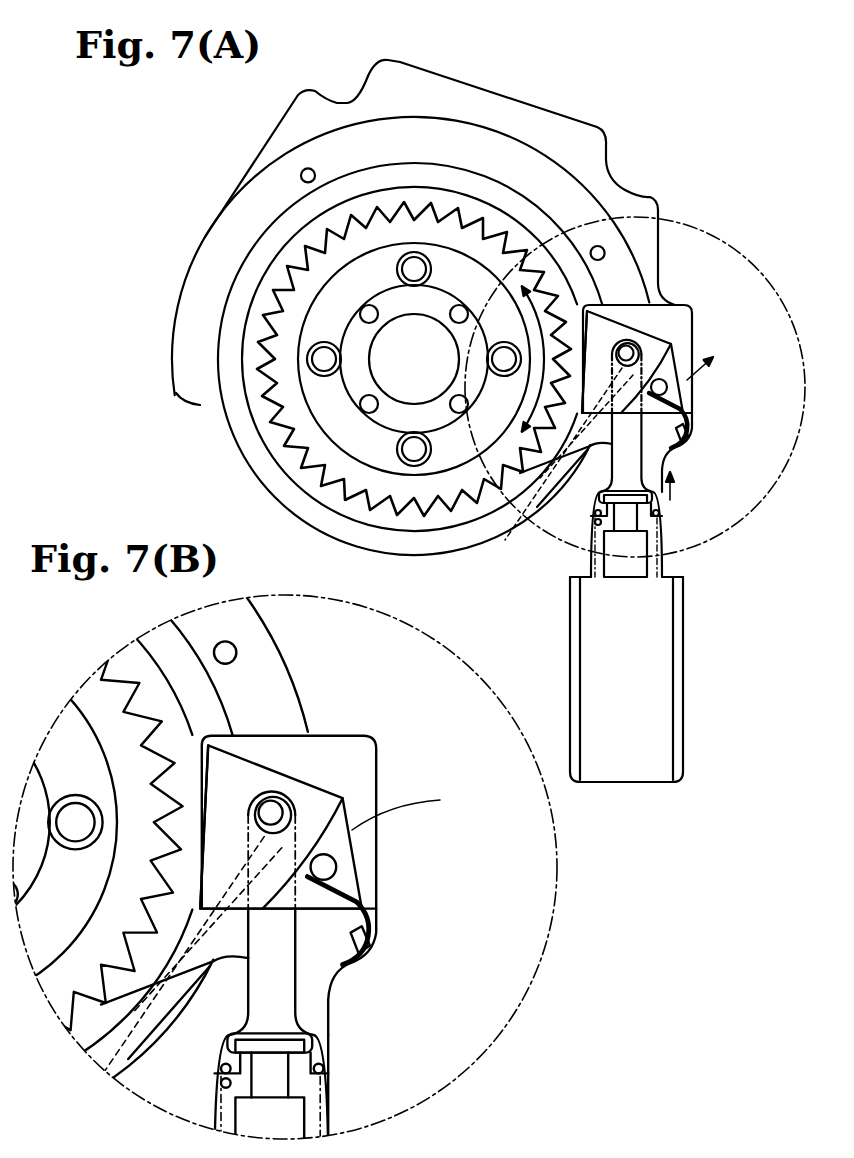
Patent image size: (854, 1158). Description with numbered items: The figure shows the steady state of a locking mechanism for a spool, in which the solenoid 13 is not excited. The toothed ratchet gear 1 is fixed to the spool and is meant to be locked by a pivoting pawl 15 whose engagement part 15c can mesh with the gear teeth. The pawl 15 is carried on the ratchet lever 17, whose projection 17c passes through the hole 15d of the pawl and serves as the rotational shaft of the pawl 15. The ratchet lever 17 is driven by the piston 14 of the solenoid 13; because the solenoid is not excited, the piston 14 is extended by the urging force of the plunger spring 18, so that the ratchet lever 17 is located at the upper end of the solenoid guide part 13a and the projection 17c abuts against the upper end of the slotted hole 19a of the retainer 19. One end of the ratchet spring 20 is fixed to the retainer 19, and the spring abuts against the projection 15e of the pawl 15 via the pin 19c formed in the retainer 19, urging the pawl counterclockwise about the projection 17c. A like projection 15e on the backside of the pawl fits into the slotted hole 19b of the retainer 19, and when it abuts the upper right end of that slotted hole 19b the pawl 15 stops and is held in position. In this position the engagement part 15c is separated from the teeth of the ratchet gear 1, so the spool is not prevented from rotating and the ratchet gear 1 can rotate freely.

In FIG. 7A, the ratchet gear 1 is at (513, 230).
In FIG. 7A, the solenoid 13 is at (683, 683).
In FIG. 7A, the solenoid guide part 13a is at (590, 502).
In FIG. 7B, the solenoid guide part 13a is at (212, 1057).
In FIG. 7A, the piston 14 is at (638, 540).
In FIG. 7A, the pawl 15 is at (660, 335).
In FIG. 7B, the pawl 15 is at (330, 790).
In FIG. 7A, the engagement part 15c is at (587, 387).
In FIG. 7B, the engagement part 15c is at (213, 860).
In FIG. 7A, the hole 15d is at (714, 356).
In FIG. 7B, the hole 15d is at (422, 807).
In FIG. 7A, the projection 15e is at (667, 387).
In FIG. 7B, the projection 15e is at (336, 867).
In FIG. 7A, the ratchet lever 17 is at (623, 453).
In FIG. 7B, the ratchet lever 17 is at (262, 985).
In FIG. 7A, the projection 17c is at (634, 352).
In FIG. 7B, the projection 17c is at (283, 800).
In FIG. 7A, the plunger spring 18 is at (650, 565).
In FIG. 7A, the retainer 19 is at (560, 108).
In FIG. 7A, the slotted hole 19a is at (570, 470).
In FIG. 7B, the slotted hole 19a is at (179, 974).
In FIG. 7A, the slotted hole 19b is at (678, 447).
In FIG. 7B, the slotted hole 19b is at (367, 960).
In FIG. 7A, the pin 19c is at (683, 407).
In FIG. 7B, the pin 19c is at (360, 898).
In FIG. 7A, the ratchet spring 20 is at (673, 447).
In FIG. 7B, the ratchet spring 20 is at (345, 967).